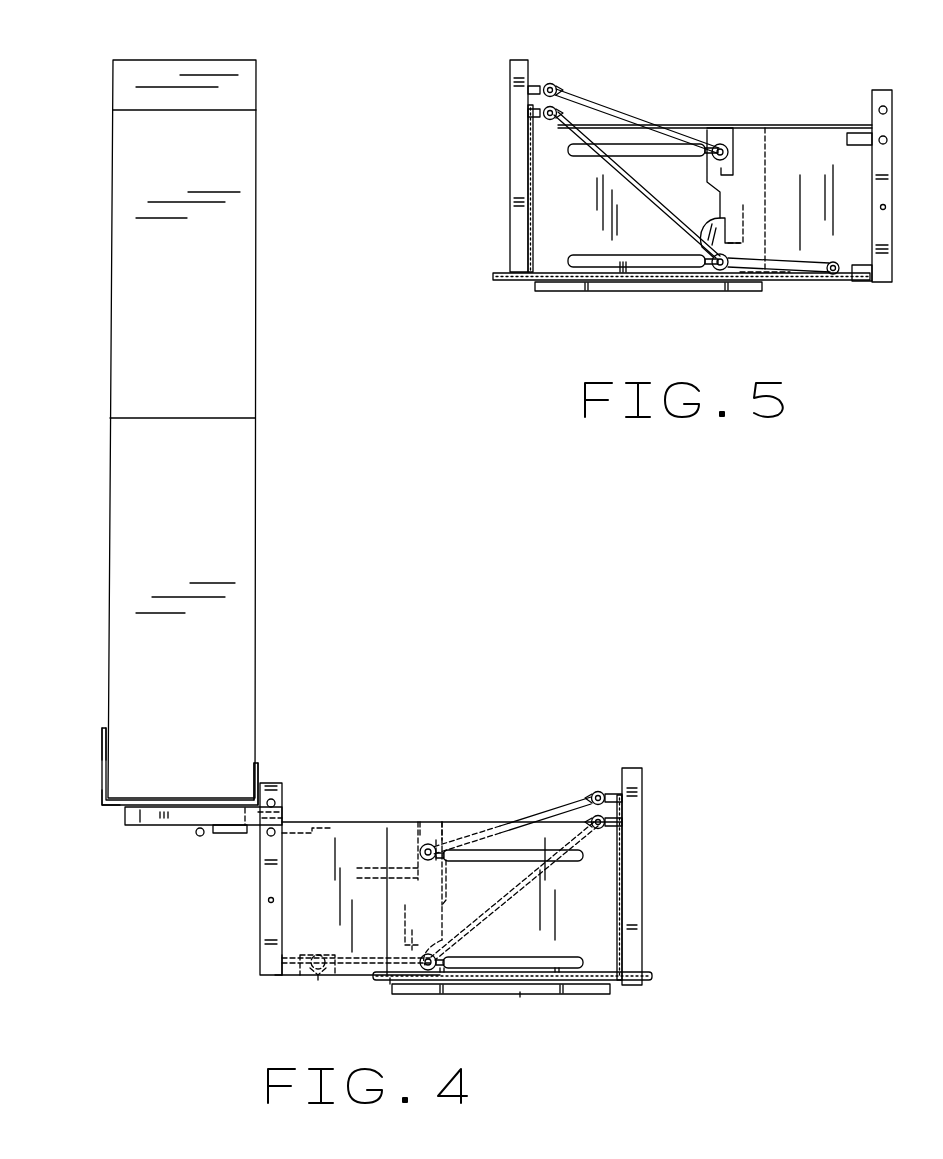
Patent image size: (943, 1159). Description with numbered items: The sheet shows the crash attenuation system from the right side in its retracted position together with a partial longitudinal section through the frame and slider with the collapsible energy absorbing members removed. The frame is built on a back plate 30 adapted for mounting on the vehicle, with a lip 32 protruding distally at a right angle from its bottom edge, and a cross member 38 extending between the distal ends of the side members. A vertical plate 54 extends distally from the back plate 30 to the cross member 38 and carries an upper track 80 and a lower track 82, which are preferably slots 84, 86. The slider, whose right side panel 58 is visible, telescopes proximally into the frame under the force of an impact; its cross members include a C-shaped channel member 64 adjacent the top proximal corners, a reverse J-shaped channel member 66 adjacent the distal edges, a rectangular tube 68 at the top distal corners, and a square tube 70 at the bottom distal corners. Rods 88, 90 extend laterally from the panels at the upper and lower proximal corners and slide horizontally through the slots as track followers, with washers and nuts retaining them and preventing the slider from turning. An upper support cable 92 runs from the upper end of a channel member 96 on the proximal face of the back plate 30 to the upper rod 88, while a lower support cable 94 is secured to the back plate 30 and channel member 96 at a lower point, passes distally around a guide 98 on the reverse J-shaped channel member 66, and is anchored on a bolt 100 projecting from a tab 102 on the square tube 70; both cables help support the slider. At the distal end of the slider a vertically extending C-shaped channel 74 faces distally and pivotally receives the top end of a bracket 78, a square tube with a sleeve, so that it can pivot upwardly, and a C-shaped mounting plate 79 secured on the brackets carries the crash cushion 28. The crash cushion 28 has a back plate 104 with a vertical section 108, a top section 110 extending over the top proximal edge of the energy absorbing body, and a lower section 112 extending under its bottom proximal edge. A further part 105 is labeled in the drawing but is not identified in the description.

In FIG. 4, the crash cushion 28 is at (264, 440).
In FIG. 5, the back plate 30 is at (528, 180).
In FIG. 4, the back plate 30 is at (612, 846).
In FIG. 5, the lip 32 is at (546, 284).
In FIG. 4, the cross member 38 is at (387, 980).
In FIG. 5, the vertical plate 54 is at (679, 194).
In FIG. 4, the vertical plate 54 is at (557, 921).
In FIG. 5, the right side panel 58 is at (834, 216).
In FIG. 4, the right side panel 58 is at (297, 881).
In FIG. 5, the C-shaped channel member 64 is at (736, 128).
In FIG. 4, the C-shaped channel member 64 is at (408, 840).
In FIG. 5, the reverse J-shaped channel member 66 is at (746, 240).
In FIG. 4, the reverse J-shaped channel member 66 is at (386, 920).
In FIG. 5, the rectangular tube 68 is at (847, 137).
In FIG. 4, the rectangular tube 68 is at (330, 830).
In FIG. 5, the square tube 70 is at (862, 282).
In FIG. 4, the square tube 70 is at (283, 977).
In FIG. 4, the C-shaped channel 74 is at (268, 905).
In FIG. 4, the bracket 78 is at (183, 818).
In FIG. 4, the C-shaped mounting plate 79 is at (100, 789).
In FIG. 5, the upper track 80 is at (558, 147).
In FIG. 4, the upper track 80 is at (594, 857).
In FIG. 5, the lower track 82 is at (558, 257).
In FIG. 4, the lower track 82 is at (594, 962).
In FIG. 5, the slot 84 is at (680, 157).
In FIG. 4, the slot 84 is at (490, 862).
In FIG. 5, the slot 86 is at (624, 256).
In FIG. 4, the slot 86 is at (556, 957).
In FIG. 5, the upper rod 88 is at (718, 143).
In FIG. 4, the upper rod 88 is at (431, 844).
In FIG. 5, the lower rod 90 is at (724, 274).
In FIG. 4, the lower rod 90 is at (433, 972).
In FIG. 5, the upper support cable 92 is at (590, 100).
In FIG. 4, the upper support cable 92 is at (580, 807).
In FIG. 5, the lower support cable 94 is at (600, 165).
In FIG. 4, the lower support cable 94 is at (552, 880).
In FIG. 5, the channel member 96 is at (515, 63).
In FIG. 4, the channel member 96 is at (642, 780).
In FIG. 5, the guide 98 is at (712, 220).
In FIG. 4, the guide 98 is at (436, 929).
In FIG. 4, the bolt 100 is at (336, 977).
In FIG. 5, the tab 102 is at (840, 283).
In FIG. 4, the tab 102 is at (305, 977).
In FIG. 4, the back plate 104 is at (136, 826).
In FIG. 5, the hidden link 105 is at (830, 286).
In FIG. 4, the vertical section 108 is at (104, 799).
In FIG. 4, the top section 110 is at (259, 767).
In FIG. 4, the lower section 112 is at (102, 732).